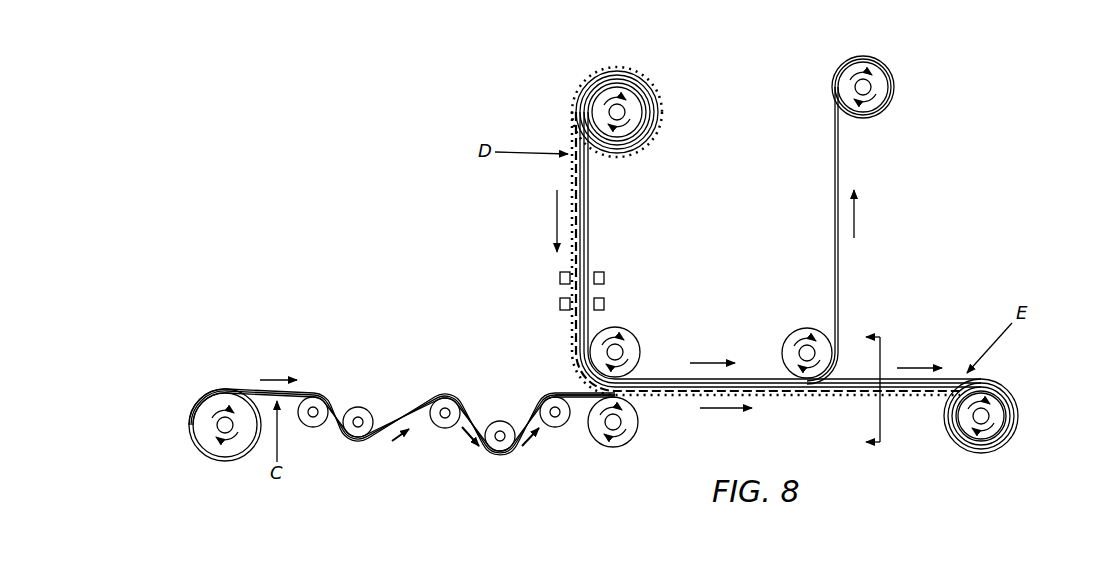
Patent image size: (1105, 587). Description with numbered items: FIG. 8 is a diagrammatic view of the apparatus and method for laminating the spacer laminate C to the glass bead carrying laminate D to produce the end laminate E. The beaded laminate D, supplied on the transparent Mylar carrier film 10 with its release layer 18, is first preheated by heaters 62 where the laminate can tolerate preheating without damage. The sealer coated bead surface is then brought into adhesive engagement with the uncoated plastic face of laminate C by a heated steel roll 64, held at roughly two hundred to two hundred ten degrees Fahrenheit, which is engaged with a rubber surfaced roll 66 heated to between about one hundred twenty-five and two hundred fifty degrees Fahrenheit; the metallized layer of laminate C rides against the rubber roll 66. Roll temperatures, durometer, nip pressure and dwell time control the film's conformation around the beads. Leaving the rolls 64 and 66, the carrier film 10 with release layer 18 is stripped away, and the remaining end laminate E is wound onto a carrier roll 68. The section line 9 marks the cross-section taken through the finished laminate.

The carrier film 10 is at (835, 172).
The release layer 18 is at (836, 163).
The heaters 62 is at (604, 278).
The heated steel roll 64 is at (633, 335).
The rubber surfaced roll 66 is at (637, 428).
The carrier roll 68 is at (988, 440).
The section line 9- 9 is at (865, 390).